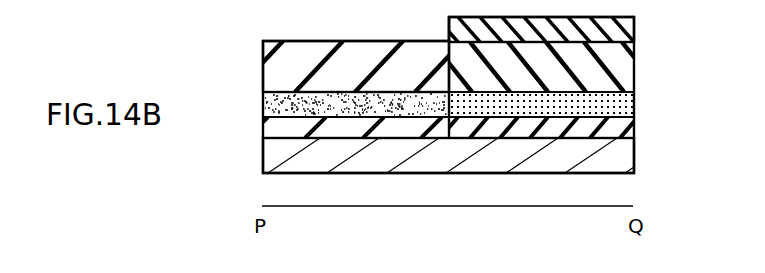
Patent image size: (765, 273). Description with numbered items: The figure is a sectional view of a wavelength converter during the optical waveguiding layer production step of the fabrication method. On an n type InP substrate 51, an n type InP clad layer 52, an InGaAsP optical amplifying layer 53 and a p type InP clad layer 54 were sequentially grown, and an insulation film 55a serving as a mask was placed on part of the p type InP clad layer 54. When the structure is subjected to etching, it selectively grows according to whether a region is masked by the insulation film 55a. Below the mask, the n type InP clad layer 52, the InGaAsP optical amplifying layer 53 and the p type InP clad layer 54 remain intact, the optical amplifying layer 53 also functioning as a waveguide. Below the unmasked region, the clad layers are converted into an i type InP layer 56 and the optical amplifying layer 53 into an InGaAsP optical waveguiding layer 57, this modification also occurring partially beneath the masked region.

The n type InP substrate 51 is at (621, 151).
The n type InP clad layer 52 is at (621, 127).
The InGaAsP optical amplifying layer 53 is at (603, 103).
The p type InP clad layer 54 is at (603, 62).
The insulation film 55a is at (603, 35).
The i type InP layer 56 is at (270, 103).
The InGaAsP optical waveguiding layer 57 is at (290, 75).